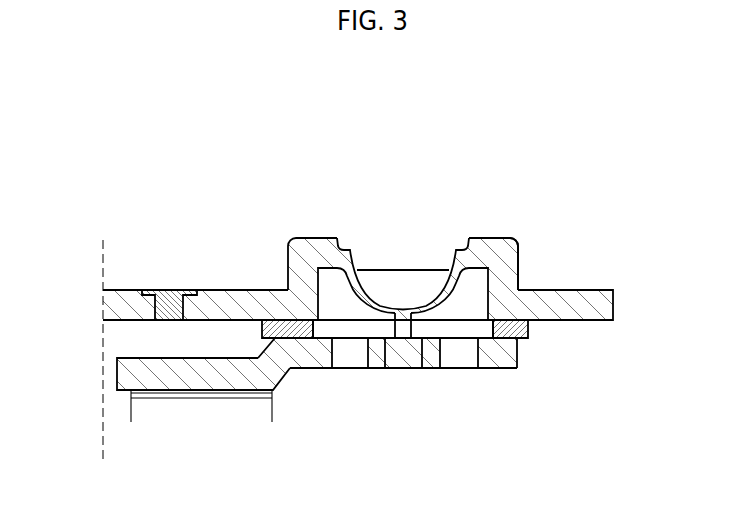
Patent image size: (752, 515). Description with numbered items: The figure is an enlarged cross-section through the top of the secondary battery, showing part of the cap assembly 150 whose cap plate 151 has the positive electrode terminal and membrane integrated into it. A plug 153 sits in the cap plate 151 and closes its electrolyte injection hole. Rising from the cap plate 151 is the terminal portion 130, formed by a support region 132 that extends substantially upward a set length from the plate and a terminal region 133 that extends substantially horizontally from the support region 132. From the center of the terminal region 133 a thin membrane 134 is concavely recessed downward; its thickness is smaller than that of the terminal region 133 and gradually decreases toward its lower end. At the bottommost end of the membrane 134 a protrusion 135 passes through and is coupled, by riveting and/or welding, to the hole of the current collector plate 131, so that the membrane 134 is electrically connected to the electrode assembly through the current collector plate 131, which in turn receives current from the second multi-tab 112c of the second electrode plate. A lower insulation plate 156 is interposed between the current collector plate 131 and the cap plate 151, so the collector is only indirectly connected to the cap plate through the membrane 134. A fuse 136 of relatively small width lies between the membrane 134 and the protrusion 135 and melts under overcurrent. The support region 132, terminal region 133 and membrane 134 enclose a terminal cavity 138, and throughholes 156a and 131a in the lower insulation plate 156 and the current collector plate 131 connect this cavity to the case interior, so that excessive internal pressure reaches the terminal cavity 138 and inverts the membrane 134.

The second multi-tab 112c is at (200, 410).
The terminal portion 130 is at (511, 186).
The current collector plate 131 is at (132, 375).
The throughhole 131a is at (458, 360).
The support region 132 is at (508, 270).
The terminal region 133 is at (488, 252).
The membrane 134 is at (360, 292).
The protrusion 135 is at (420, 340).
The fuse 136 is at (404, 314).
The terminal cavity 138 is at (342, 303).
The cap assembly 150 is at (624, 250).
The cap plate 151 is at (605, 305).
The plug 153 is at (162, 292).
The lower insulation plate 156 is at (523, 333).
The throughhole 156a is at (485, 340).